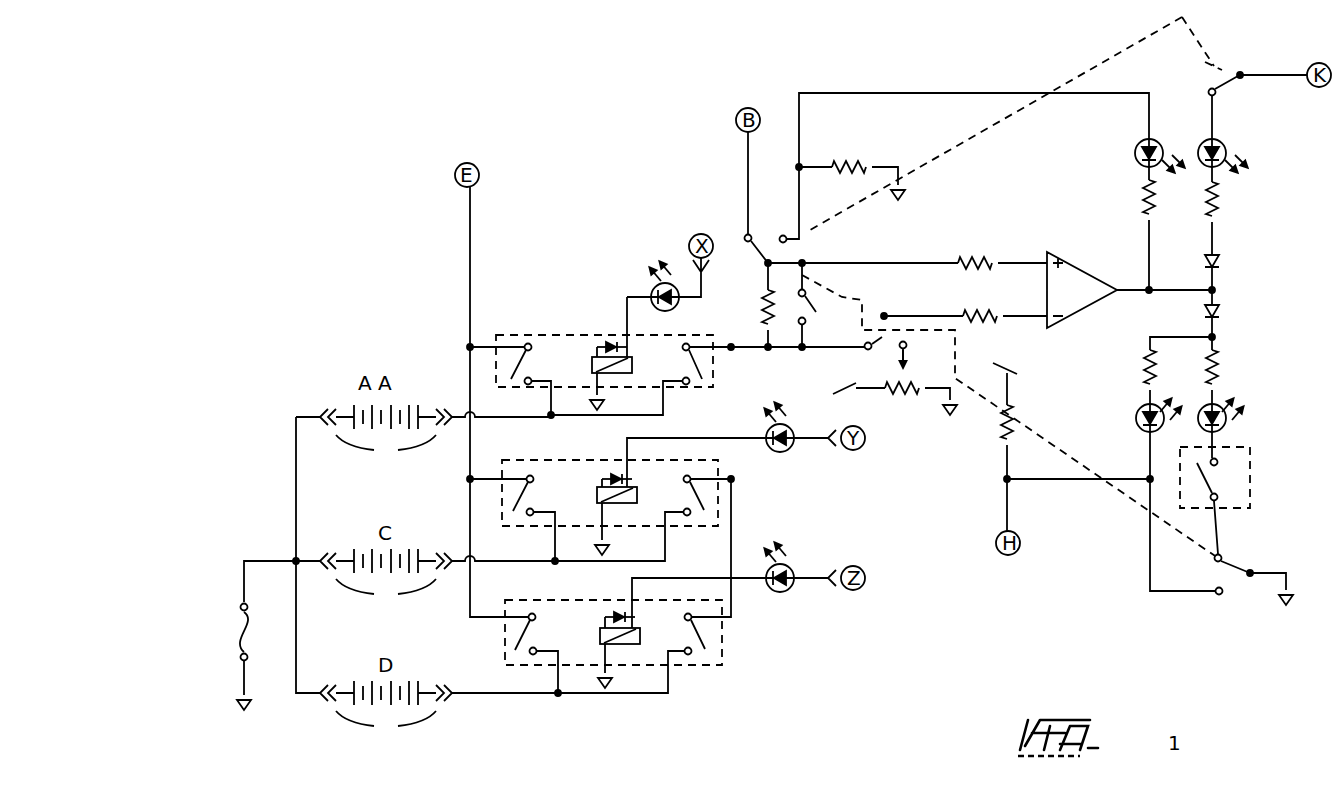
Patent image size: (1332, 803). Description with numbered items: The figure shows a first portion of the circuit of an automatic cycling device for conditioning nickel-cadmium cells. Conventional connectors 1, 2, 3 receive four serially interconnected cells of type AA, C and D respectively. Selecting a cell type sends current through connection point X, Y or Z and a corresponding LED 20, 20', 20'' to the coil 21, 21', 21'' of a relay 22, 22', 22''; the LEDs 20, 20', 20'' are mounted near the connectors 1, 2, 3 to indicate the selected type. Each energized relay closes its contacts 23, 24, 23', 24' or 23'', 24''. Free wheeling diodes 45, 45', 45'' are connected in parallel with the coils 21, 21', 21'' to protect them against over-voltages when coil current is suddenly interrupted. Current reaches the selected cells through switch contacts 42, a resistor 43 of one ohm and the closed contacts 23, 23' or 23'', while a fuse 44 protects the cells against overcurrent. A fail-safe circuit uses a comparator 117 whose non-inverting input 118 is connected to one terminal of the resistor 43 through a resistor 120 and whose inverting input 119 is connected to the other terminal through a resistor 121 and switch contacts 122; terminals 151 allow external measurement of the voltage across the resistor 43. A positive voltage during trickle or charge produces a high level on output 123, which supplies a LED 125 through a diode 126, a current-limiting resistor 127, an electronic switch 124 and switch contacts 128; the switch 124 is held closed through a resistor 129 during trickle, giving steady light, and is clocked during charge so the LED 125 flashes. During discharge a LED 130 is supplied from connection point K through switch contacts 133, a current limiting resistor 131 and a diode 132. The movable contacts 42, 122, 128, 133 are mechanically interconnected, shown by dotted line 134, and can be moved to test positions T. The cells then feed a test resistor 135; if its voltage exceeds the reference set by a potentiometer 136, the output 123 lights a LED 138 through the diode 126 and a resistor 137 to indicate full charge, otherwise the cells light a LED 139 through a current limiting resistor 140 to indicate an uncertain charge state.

The connectors 1 is at (386, 436).
The connectors 2 is at (386, 580).
The connectors 3 is at (386, 713).
The LED 20 is at (674, 303).
The LED 20' is at (710, 443).
The LED 20'' is at (718, 592).
The coil 21 is at (631, 378).
The coil 21' is at (637, 517).
The coil 21'' is at (641, 652).
The relay 22 is at (604, 343).
The relay 22' is at (610, 474).
The relay 22'' is at (613, 615).
The contacts 23 is at (642, 384).
The contacts 23' is at (644, 519).
The contacts 23'' is at (644, 592).
The contacts 24 is at (512, 381).
The contacts 24' is at (514, 520).
The contacts 24'' is at (515, 655).
The contacts 42 is at (764, 230).
The resistor 43 is at (750, 300).
The fuse 44 is at (238, 620).
The free wheeling diode 45 is at (609, 312).
The free wheeling diode 45' is at (591, 480).
The free wheeling diode 45'' is at (592, 622).
The comparator 117 is at (1058, 258).
The non-inverting input 118 is at (1022, 262).
The inverting input 119 is at (1020, 315).
The resistor 120 is at (960, 262).
The resistor 121 is at (964, 316).
The switch contacts 122 is at (880, 328).
The output 123 is at (1134, 298).
The electronic switch 124 is at (1240, 460).
The LED 125 is at (1228, 418).
The diode 126 is at (1222, 307).
The current-limiting resistor 127 is at (1225, 372).
The switch contacts 128 is at (1238, 566).
The resistor 129 is at (998, 428).
The LED 130 is at (1227, 150).
The current limiting resistor 131 is at (1225, 212).
The diode 132 is at (1222, 265).
The switch contacts 133 is at (1242, 72).
The dotted line 134 is at (1108, 63).
The test resistor 135 is at (870, 150).
The potentiometer 136 is at (904, 395).
The resistor 137 is at (1138, 372).
The LED 138 is at (1134, 428).
The LED 139 is at (1134, 155).
The current limiting resistor 140 is at (1152, 205).
The terminals 151 is at (812, 310).